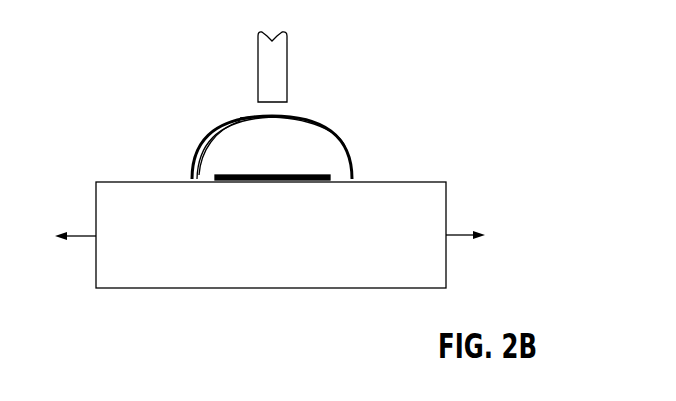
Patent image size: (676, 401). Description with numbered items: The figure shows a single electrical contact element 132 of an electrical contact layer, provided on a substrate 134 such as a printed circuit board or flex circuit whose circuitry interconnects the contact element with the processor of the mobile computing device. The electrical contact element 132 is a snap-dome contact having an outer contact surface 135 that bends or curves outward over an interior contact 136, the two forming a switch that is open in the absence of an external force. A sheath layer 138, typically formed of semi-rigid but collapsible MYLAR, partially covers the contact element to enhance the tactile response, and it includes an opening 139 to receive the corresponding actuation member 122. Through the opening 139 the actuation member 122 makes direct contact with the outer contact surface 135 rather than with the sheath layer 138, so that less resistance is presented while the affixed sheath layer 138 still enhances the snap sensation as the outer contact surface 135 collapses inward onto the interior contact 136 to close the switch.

The actuation member 122 is at (283, 61).
The electrical contact element 132 is at (288, 128).
The substrate 134 is at (270, 235).
The outer contact surface 135 is at (212, 140).
The interior contact 136 is at (322, 174).
The sheath layer 138 is at (223, 124).
The opening 139 is at (253, 117).